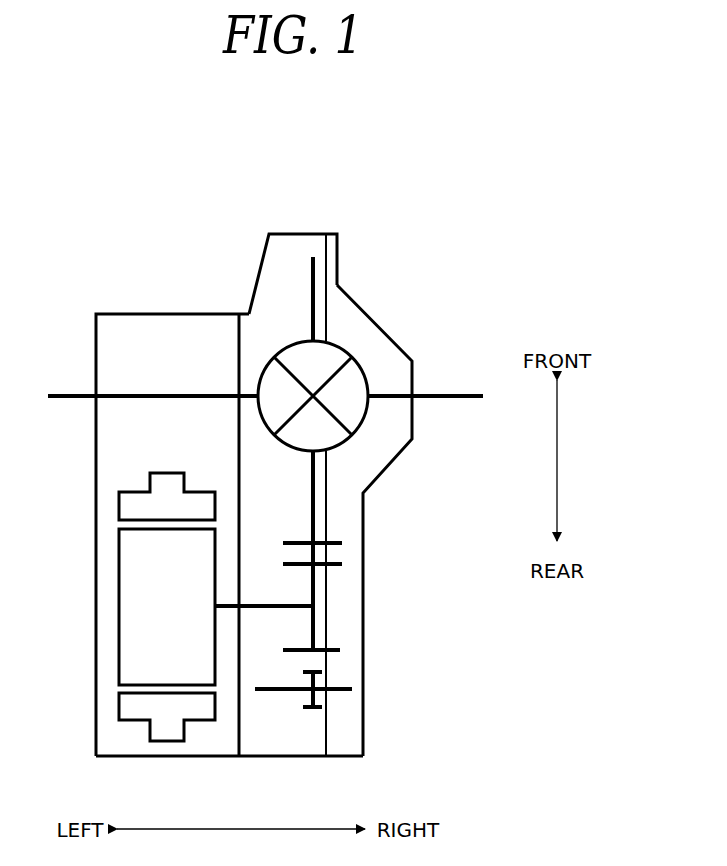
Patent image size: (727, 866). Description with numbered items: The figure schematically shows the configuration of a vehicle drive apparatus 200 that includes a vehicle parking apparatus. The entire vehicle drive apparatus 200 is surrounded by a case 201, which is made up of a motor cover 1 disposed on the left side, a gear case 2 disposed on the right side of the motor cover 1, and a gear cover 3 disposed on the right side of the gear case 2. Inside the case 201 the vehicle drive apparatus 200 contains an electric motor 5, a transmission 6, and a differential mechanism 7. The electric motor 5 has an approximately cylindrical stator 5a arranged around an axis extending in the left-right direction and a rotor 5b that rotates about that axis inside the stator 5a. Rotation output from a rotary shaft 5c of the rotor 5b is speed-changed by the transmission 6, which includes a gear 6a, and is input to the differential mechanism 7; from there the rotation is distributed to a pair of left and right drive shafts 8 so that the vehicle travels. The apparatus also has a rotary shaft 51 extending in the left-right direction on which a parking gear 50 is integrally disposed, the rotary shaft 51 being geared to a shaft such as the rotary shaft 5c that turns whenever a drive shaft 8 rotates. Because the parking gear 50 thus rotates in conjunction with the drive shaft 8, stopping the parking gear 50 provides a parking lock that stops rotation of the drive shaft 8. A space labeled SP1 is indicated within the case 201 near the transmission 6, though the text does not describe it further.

The motor cover 1 is at (96, 341).
The gear case 2 is at (285, 234).
The case 201 is at (316, 231).
The gear cover 3 is at (412, 376).
The vehicle drive apparatus 200 is at (452, 205).
The drive shaft 8 is at (66, 398).
The differential mechanism 7 is at (362, 434).
The transmission 6 is at (334, 604).
The gear 6a is at (341, 652).
The space SP1 is at (346, 513).
The parking gear 50 is at (310, 710).
The rotary shaft 51 is at (352, 691).
The rotary shaft 5c is at (265, 608).
The stator 5a is at (135, 492).
The rotor 5b is at (119, 560).
The electric motor 5 is at (164, 748).